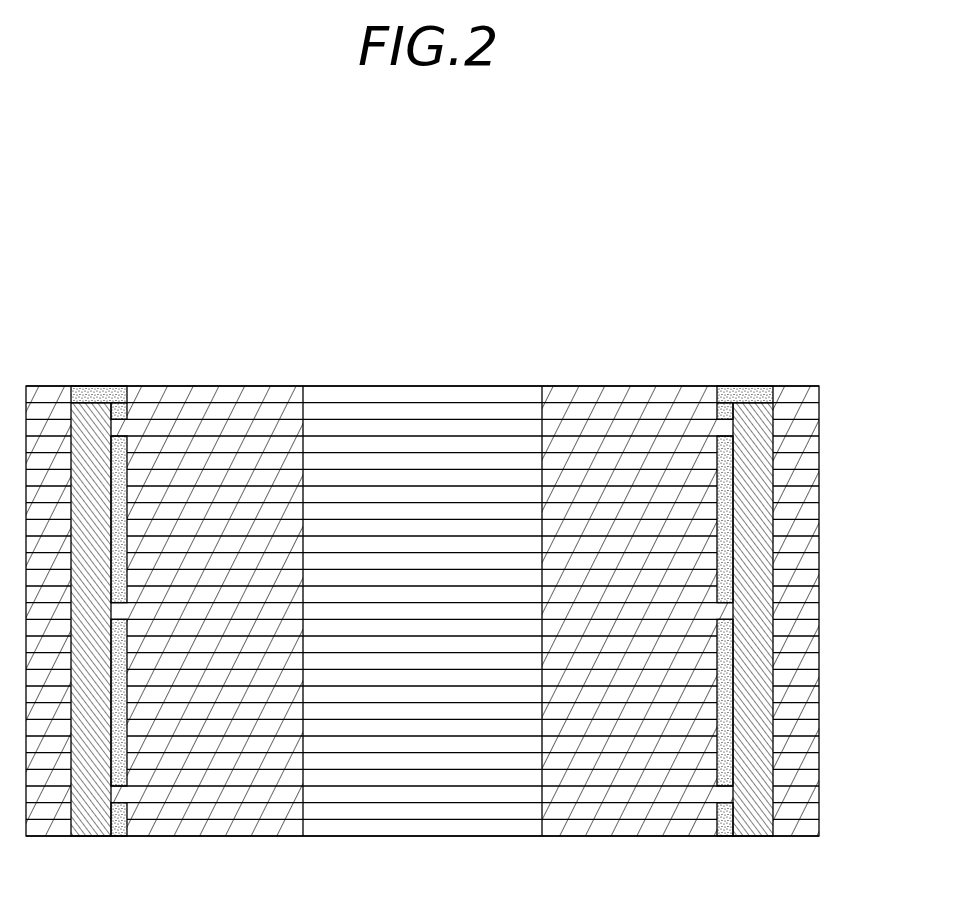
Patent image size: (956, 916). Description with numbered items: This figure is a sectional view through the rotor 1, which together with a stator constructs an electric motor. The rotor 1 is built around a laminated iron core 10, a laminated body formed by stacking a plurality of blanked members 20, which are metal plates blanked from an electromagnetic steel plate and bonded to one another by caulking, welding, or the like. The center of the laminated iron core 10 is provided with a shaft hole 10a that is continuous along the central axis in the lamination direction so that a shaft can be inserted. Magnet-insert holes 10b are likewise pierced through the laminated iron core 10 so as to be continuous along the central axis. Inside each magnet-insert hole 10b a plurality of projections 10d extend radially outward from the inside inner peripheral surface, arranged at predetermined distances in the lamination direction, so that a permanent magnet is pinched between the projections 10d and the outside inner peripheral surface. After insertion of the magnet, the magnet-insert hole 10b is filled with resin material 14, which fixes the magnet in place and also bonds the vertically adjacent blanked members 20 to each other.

The rotor 1 is at (749, 314).
The laminated iron core 10 is at (92, 336).
The shaft hole 10a is at (486, 368).
The magnet-insert hole 10b is at (120, 836).
The projection 10d is at (120, 386).
The resin material 14 is at (87, 386).
The blanked member 20 is at (627, 828).